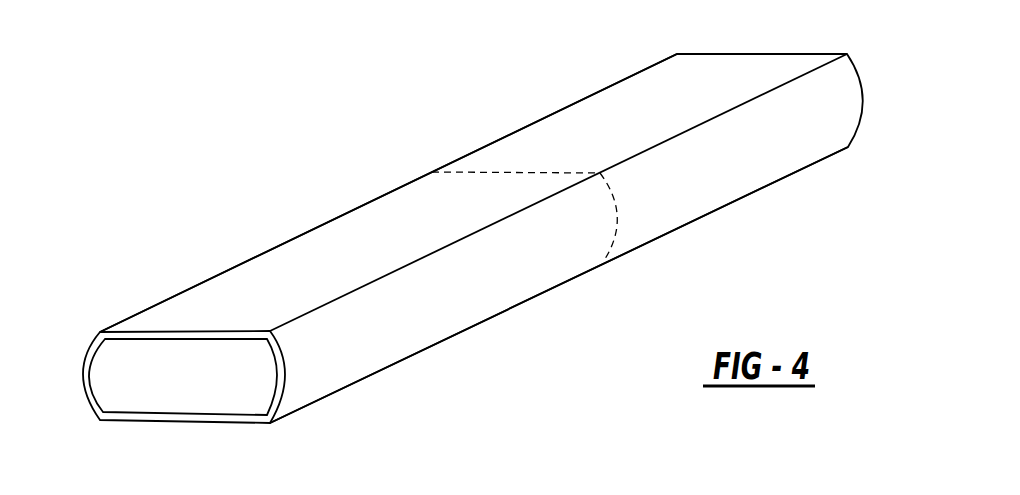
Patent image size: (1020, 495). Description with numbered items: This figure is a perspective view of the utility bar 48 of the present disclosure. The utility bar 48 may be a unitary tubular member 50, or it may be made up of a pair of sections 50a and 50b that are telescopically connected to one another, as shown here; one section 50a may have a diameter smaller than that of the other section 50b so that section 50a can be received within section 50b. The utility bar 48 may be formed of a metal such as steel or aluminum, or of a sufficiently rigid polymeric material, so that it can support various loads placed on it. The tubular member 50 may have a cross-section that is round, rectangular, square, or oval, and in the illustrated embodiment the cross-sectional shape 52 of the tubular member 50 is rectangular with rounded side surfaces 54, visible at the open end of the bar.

The utility bar 48 is at (327, 148).
The tubular member 50 is at (461, 272).
The first section 50a is at (483, 285).
The second section 50b is at (765, 153).
The cross-sectional shape 52 is at (167, 420).
The rounded side surfaces 54 is at (282, 374).